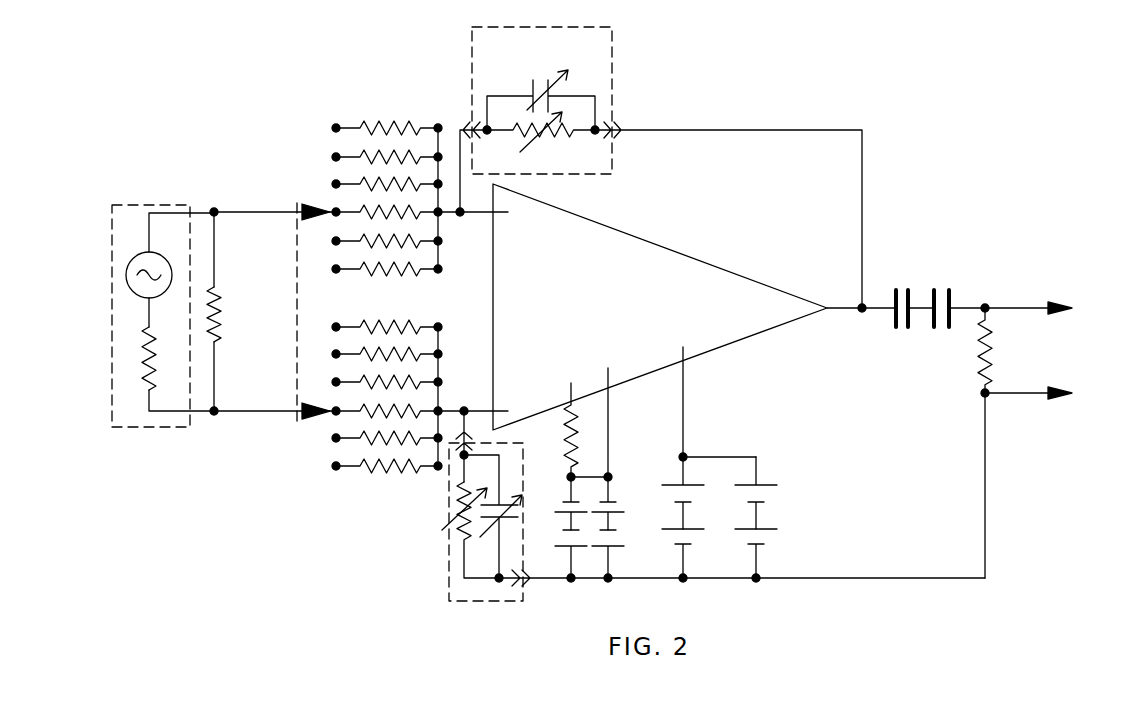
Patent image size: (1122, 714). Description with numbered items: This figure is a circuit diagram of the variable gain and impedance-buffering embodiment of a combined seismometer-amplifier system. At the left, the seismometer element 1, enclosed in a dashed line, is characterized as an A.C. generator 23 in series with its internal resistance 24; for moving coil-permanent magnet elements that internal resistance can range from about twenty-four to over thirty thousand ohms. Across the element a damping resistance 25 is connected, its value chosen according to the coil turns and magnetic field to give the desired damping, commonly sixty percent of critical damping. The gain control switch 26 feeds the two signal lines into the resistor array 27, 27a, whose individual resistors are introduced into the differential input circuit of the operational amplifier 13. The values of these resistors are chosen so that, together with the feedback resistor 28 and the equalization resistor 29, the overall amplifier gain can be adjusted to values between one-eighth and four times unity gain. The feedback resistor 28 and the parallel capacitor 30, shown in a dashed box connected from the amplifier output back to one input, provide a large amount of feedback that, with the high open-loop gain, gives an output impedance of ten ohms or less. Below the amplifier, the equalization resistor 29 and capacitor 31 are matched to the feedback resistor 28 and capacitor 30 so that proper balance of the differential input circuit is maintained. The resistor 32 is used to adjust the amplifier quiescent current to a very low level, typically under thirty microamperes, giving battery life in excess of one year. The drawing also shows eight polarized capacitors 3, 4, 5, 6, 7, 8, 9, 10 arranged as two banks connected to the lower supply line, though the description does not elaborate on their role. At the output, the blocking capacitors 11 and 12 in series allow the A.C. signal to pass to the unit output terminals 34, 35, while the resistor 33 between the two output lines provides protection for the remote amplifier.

The seismometer element 1 is at (114, 205).
The A.C. generator 23 is at (149, 253).
The internal resistance 24 is at (150, 345).
The damping resistance 25 is at (218, 340).
The gain control switch 26 is at (300, 420).
The resistor array 27 is at (382, 120).
The resistor array 27a is at (422, 322).
The operational amplifier 13 is at (647, 248).
The feedback resistor 28 is at (533, 138).
The capacitor 30 is at (543, 85).
The equalization resistor 29 is at (462, 522).
The capacitor 31 is at (510, 500).
The resistor 32 is at (569, 438).
The electrolytic capacitor 3 is at (569, 503).
The electrolytic capacitor 4 is at (570, 548).
The electrolytic capacitor 5 is at (616, 503).
The electrolytic capacitor 6 is at (618, 554).
The electrolytic capacitor 7 is at (684, 492).
The electrolytic capacitor 8 is at (680, 553).
The electrolytic capacitor 9 is at (766, 492).
The electrolytic capacitor 10 is at (774, 553).
The blocking capacitor 11 is at (898, 290).
The blocking capacitor 12 is at (940, 290).
The resistor 33 is at (993, 353).
The unit output terminal 34 is at (1047, 309).
The unit output terminal 35 is at (1047, 394).